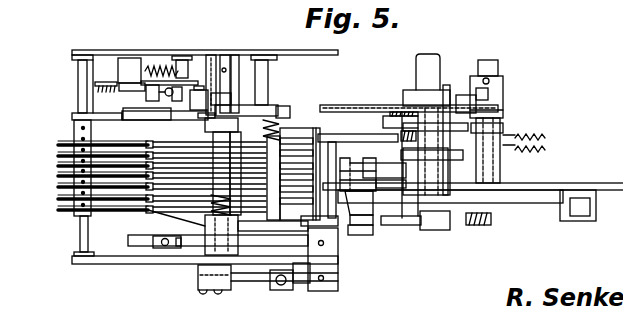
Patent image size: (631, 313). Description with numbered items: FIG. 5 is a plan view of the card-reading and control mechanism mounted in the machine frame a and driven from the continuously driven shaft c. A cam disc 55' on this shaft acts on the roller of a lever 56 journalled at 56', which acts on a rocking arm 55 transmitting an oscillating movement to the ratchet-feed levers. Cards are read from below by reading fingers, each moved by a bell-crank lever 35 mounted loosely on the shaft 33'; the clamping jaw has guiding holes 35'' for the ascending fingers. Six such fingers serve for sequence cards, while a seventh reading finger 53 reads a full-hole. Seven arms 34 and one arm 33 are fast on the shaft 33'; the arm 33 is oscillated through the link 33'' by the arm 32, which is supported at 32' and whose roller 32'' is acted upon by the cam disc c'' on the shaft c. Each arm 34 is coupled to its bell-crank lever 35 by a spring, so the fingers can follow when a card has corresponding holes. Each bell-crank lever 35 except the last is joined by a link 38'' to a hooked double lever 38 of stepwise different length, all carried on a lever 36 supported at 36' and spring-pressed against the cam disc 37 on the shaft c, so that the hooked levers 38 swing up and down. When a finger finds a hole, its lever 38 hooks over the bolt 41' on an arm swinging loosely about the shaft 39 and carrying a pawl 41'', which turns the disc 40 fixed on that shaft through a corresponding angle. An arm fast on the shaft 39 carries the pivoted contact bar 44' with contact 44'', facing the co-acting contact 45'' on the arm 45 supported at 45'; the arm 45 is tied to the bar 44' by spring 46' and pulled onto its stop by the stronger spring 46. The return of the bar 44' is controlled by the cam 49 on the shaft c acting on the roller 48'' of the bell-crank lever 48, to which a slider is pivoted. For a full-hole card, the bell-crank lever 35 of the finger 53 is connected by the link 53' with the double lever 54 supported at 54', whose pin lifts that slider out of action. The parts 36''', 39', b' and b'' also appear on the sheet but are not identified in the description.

The arm 32 is at (499, 121).
The arm support 32' is at (505, 91).
The roller 32'' is at (502, 110).
The arm 33 is at (125, 110).
The shaft 33' is at (72, 86).
The link 33'' is at (409, 97).
The arms 34 is at (98, 133).
The bell-crank lever 35 is at (148, 176).
The guiding holes 35'' is at (147, 121).
The lever 36 is at (412, 164).
The lever support 36' is at (533, 117).
The bar 36''' is at (393, 109).
The cam disc 37 is at (50, 180).
The double lever 38 is at (358, 169).
The link 38'' is at (200, 115).
The shaft 39 is at (193, 86).
The post 39' is at (280, 82).
The disc 40 is at (228, 117).
The bolt 41' is at (262, 170).
The pawl 41'' is at (297, 101).
The contact bar 44' is at (183, 53).
The contact 44'' is at (186, 112).
The arm 45 is at (148, 71).
The arm support 45' is at (131, 96).
The co-acting contact 45'' is at (163, 108).
The spring 46 is at (153, 52).
The spring 46' is at (105, 95).
The bell-crank lever 48 is at (369, 203).
The roller 48'' is at (378, 156).
The cam 49 is at (450, 143).
The reading finger 53 is at (218, 235).
The link 53' is at (189, 210).
The double lever 54 is at (324, 218).
The bolt 54' is at (328, 269).
The rocking arm 55 is at (304, 287).
The cam disc 55' is at (285, 293).
The lever 56 is at (219, 288).
The journal 56' is at (272, 290).
The machine frame a is at (152, 42).
The bar b' is at (450, 210).
The block b'' is at (578, 205).
The shaft c is at (415, 144).
The cam disc c'' is at (389, 85).